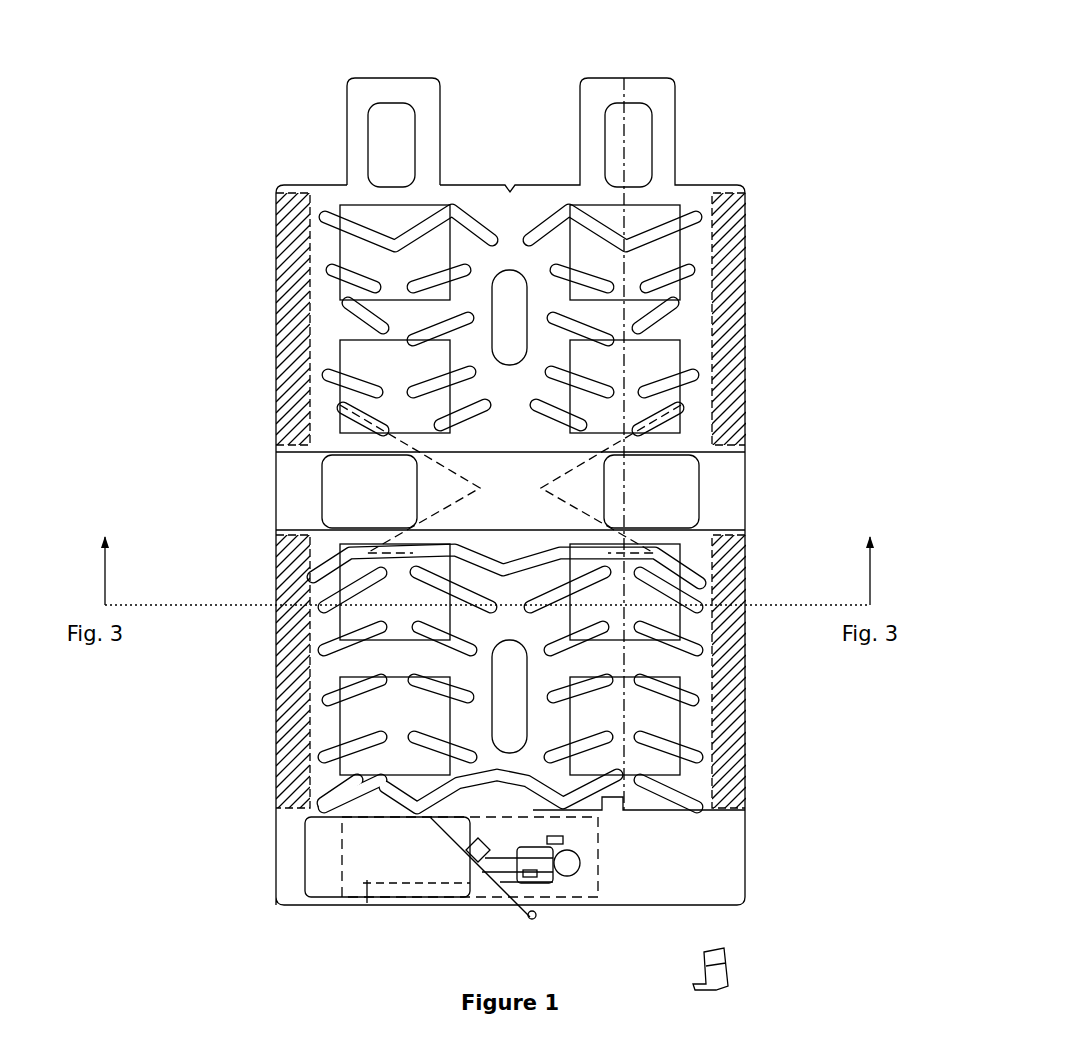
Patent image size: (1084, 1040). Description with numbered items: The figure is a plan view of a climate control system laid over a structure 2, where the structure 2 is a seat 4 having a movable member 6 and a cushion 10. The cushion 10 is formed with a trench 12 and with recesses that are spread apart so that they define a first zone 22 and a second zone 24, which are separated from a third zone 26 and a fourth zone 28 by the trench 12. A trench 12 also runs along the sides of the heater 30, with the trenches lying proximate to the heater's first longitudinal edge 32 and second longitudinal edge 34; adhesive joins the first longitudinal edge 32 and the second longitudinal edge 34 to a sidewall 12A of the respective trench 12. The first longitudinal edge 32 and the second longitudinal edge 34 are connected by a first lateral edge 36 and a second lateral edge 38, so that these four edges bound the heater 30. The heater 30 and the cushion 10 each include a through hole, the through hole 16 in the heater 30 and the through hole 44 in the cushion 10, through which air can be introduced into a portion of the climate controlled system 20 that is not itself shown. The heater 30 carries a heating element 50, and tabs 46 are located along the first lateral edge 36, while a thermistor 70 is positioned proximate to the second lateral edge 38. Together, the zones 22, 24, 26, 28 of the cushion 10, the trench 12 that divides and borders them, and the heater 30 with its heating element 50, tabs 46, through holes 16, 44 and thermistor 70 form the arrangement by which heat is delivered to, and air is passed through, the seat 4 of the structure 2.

The structure 2 is at (103, 90).
The seat 4 is at (770, 962).
The movable member 6 is at (400, 362).
The cushion 10 is at (660, 905).
The trench 12 is at (300, 485).
The sidewall 12A is at (318, 180).
The through hole 16 is at (590, 445).
The climate controlled system 20 is at (160, 798).
The first zone 22 is at (335, 193).
The second zone 24 is at (715, 190).
The third zone 26 is at (340, 728).
The fourth zone 28 is at (712, 712).
The heater 30 is at (720, 852).
The first longitudinal edge 32 is at (292, 912).
The second longitudinal edge 34 is at (757, 950).
The first lateral edge 36 is at (800, 190).
The second lateral edge 38 is at (785, 897).
The through hole 44 is at (550, 263).
The tab 46 is at (432, 106).
The heating element 50 is at (597, 462).
The thermistor 70 is at (600, 863).